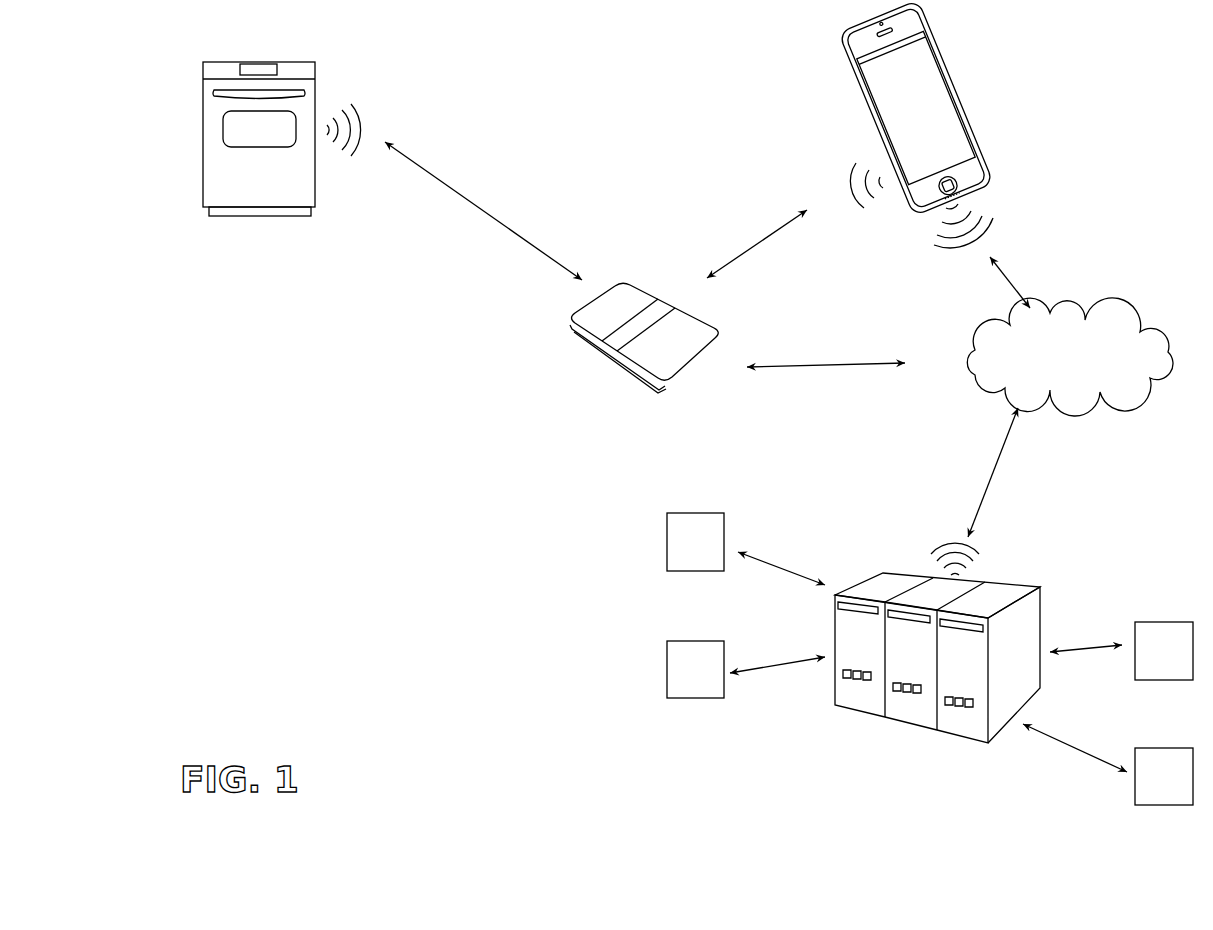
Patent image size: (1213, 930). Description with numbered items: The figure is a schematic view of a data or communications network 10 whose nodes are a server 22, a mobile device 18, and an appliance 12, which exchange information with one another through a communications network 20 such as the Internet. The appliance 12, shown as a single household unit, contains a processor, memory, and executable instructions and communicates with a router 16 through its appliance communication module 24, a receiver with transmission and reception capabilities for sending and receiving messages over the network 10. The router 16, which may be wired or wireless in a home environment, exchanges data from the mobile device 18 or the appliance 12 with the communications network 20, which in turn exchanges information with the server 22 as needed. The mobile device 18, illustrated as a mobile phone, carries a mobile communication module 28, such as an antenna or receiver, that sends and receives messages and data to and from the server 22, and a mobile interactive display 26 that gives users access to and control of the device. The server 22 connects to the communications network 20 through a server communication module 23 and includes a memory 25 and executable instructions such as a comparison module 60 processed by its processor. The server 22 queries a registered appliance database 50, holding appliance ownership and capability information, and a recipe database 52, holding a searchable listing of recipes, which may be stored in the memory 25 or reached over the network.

The network 10 is at (466, 476).
The appliance 12 is at (203, 133).
The router 16 is at (647, 287).
The mobile device 18 is at (957, 97).
The communications network 20 is at (1076, 357).
The server 22 is at (1041, 638).
The server communication module 23 is at (926, 550).
The appliance communication module 24 is at (374, 103).
The memory 25 is at (1164, 651).
The mobile interactive display 26 is at (890, 113).
The mobile communication module 28 is at (933, 244).
The registered appliance database 50 is at (695, 542).
The recipe database 52 is at (695, 669).
The comparison module 60 is at (1164, 776).